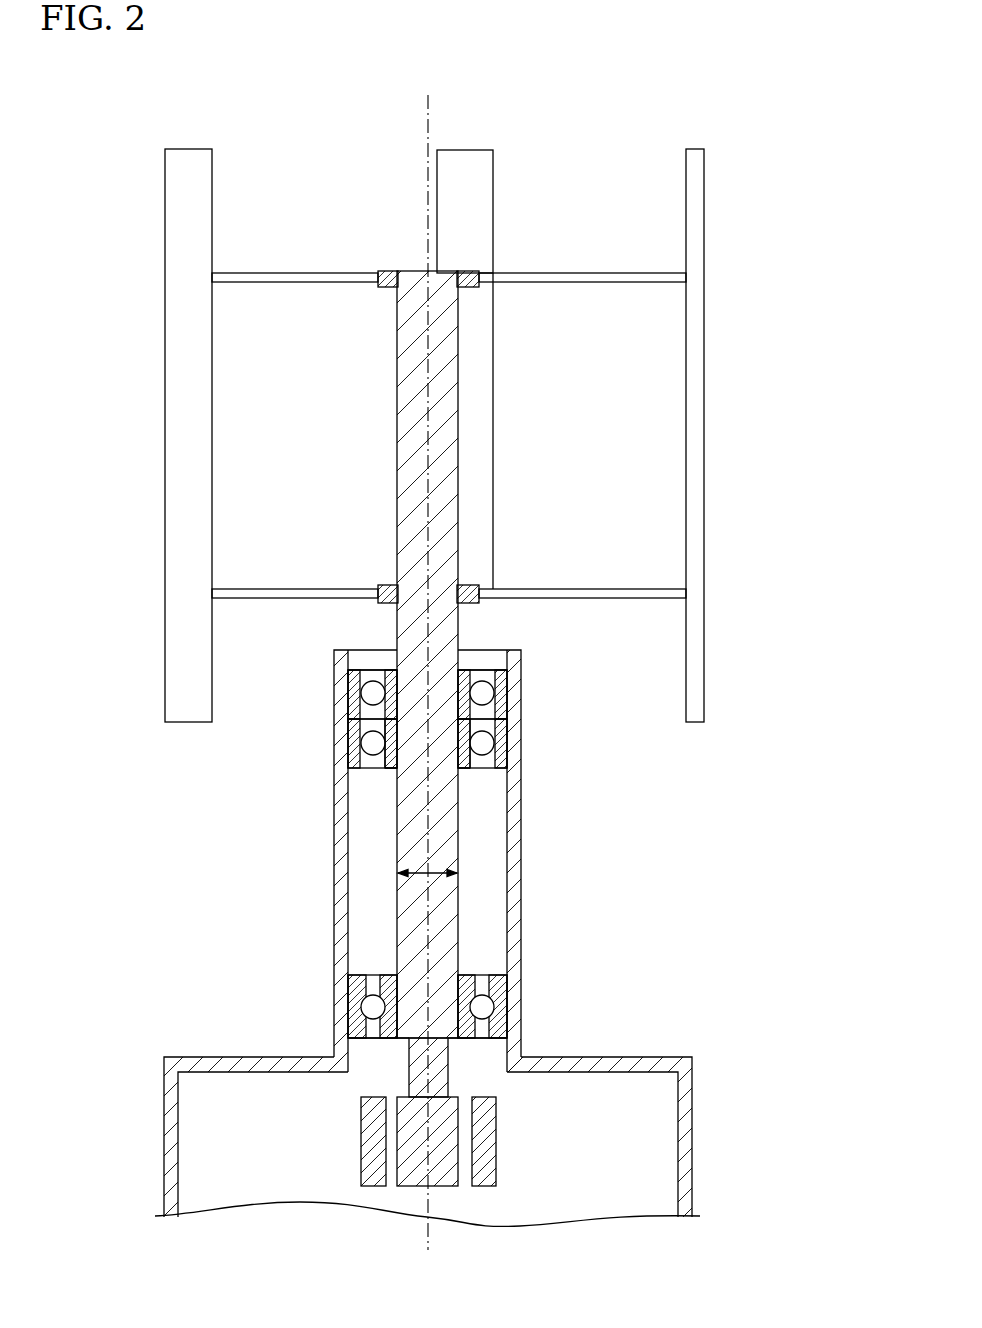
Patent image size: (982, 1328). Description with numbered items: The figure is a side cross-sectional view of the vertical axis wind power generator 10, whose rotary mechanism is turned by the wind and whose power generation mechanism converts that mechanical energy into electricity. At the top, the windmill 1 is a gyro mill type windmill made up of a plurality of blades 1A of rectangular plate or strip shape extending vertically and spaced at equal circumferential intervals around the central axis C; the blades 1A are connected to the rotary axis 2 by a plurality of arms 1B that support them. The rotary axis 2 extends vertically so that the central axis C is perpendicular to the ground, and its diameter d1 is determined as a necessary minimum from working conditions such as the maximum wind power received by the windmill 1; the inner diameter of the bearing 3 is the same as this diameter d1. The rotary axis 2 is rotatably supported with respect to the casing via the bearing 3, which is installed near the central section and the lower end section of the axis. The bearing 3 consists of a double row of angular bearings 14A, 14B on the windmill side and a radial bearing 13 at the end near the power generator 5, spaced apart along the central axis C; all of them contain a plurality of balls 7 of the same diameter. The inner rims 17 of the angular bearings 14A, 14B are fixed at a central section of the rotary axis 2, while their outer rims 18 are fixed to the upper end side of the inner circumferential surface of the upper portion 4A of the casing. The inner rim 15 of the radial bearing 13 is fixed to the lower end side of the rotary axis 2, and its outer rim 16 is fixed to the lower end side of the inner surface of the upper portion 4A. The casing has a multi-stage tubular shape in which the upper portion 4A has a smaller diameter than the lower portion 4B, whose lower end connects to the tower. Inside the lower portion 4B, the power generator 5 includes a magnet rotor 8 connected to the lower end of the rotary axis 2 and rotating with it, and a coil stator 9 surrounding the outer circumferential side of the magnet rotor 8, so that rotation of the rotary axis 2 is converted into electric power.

The vertical axis wind power generator 10 is at (707, 100).
The windmill 1 is at (440, 435).
The blade 1A is at (165, 432).
The arm 1B is at (293, 272).
The central axis C is at (431, 117).
The rotary axis 2 is at (397, 860).
The diameter of the rotary axis d1 is at (437, 875).
The bearing 3 is at (395, 854).
The upper portion of the casing 4A is at (527, 795).
The lower portion of the casing 4B is at (700, 1136).
The angular bearing 14A is at (404, 699).
The angular bearing 14B is at (486, 743).
The radial bearing 13 is at (400, 972).
The ball 7 is at (486, 692).
The outer rim of the angular bearing 18 is at (348, 757).
The inner rim of the angular bearing 17 is at (385, 770).
The inner rim of the radial bearing 15 is at (467, 977).
The outer rim of the radial bearing 16 is at (502, 990).
The power generator 5 is at (489, 1149).
The magnet rotor 8 is at (443, 1186).
The coil stator 9 is at (497, 1140).